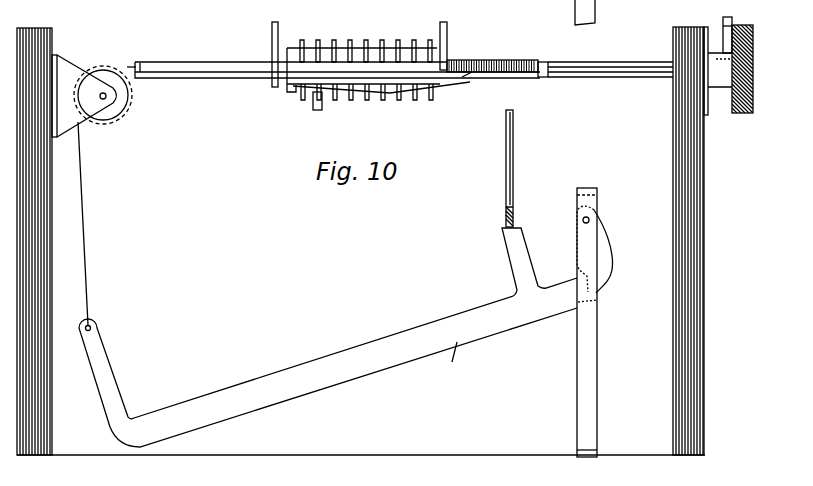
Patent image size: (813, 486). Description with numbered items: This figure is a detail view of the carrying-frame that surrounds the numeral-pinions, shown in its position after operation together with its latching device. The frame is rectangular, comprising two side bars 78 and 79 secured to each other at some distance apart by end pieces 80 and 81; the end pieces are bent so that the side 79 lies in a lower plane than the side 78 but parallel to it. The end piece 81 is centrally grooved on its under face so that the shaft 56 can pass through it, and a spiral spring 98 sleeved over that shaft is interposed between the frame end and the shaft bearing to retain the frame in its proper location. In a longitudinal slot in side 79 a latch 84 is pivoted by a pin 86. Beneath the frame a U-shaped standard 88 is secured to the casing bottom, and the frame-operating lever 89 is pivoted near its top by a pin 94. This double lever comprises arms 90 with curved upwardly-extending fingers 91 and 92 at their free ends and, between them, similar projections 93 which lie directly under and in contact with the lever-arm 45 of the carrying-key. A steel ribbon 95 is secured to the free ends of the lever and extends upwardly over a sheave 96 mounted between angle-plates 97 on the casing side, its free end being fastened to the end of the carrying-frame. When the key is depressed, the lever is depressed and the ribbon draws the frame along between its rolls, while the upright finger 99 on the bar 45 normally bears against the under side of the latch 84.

The angle-plates 97 is at (61, 57).
The sheave 96 is at (119, 117).
The end piece 80 is at (135, 66).
The side bar 78 is at (186, 62).
The side bar 79 is at (196, 81).
The latch 84 is at (392, 84).
The spiral spring 98 is at (497, 61).
The pin 86 is at (463, 78).
The end piece 81 is at (551, 64).
The shaft 56 is at (591, 79).
The upright finger 99 is at (514, 152).
The lever-arm 45 is at (514, 215).
The U-shaped standard 88 is at (591, 347).
The pin 94 is at (590, 219).
The curved upwardly-extending finger 91 is at (600, 243).
The curved upwardly-extending finger 92 is at (106, 367).
The frame-operating lever 89 is at (353, 362).
The projections 93 is at (515, 257).
The arms 90 is at (466, 359).
The steel ribbon 95 is at (88, 272).